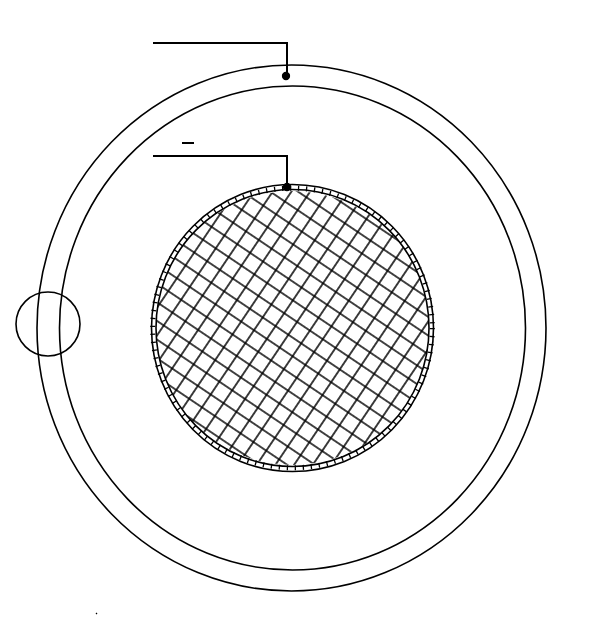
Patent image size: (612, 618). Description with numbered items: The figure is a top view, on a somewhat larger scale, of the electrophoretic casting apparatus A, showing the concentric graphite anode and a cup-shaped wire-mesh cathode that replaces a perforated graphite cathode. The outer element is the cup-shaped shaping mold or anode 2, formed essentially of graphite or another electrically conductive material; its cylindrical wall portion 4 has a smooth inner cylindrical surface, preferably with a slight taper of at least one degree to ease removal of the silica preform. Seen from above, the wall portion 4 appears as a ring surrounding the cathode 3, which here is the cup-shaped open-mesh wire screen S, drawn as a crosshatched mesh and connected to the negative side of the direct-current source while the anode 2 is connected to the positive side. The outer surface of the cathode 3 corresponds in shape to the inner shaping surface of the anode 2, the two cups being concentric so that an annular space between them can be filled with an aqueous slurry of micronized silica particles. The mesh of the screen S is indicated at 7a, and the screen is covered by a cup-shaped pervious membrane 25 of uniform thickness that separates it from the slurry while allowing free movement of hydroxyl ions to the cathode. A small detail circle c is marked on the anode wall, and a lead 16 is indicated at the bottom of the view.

The electrode assembly A is at (133, 118).
The cup-shaped shaping mold or anode 2 is at (200, 98).
The cylindrical wall portion 4 is at (524, 363).
The screen S is at (368, 205).
The cathode 3 is at (177, 399).
The pervious sheet or membrane 25 is at (253, 470).
The mesh electrode 7a is at (200, 256).
The detail circle c is at (35, 296).
The lead 16 is at (102, 604).